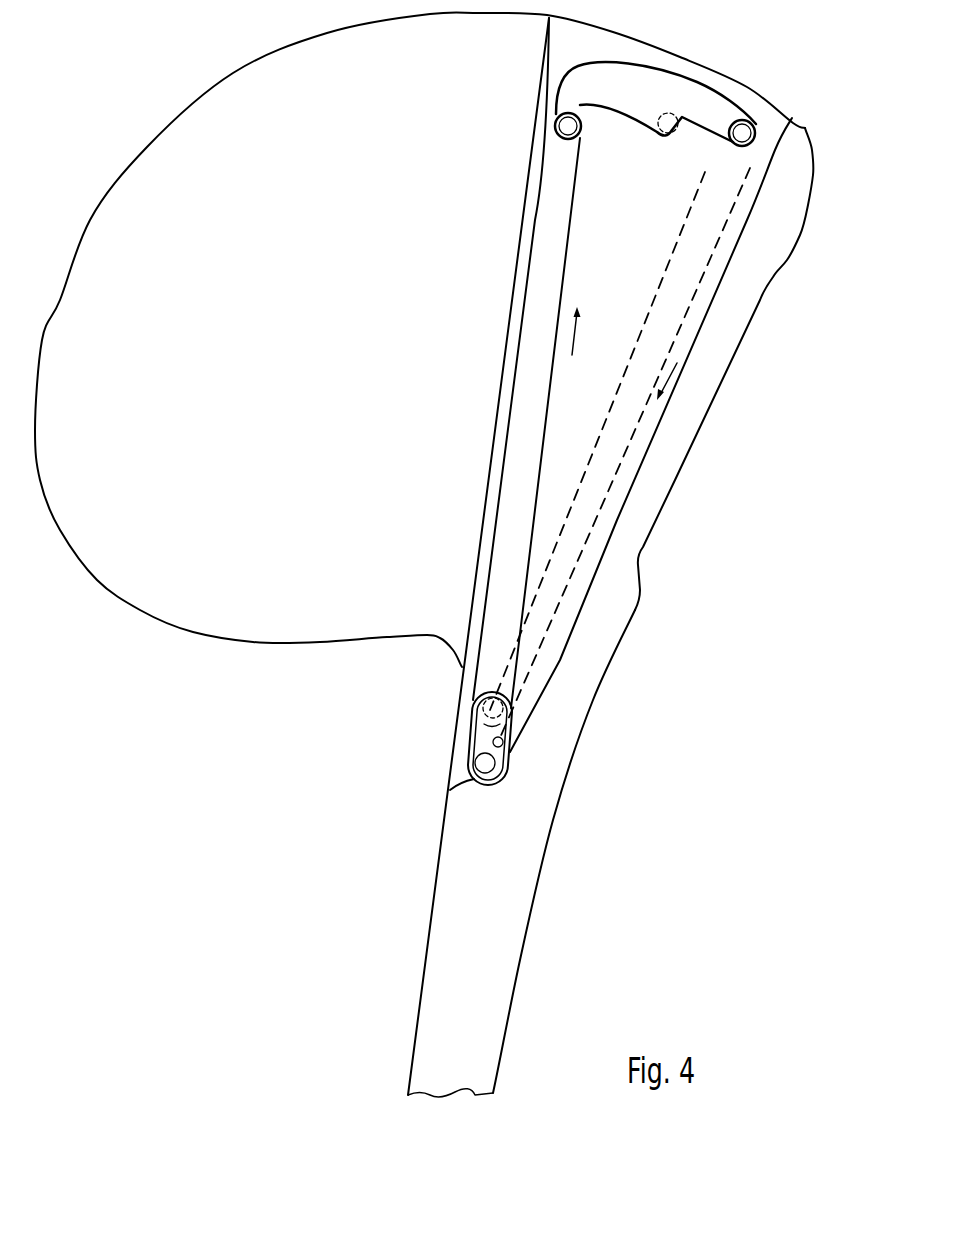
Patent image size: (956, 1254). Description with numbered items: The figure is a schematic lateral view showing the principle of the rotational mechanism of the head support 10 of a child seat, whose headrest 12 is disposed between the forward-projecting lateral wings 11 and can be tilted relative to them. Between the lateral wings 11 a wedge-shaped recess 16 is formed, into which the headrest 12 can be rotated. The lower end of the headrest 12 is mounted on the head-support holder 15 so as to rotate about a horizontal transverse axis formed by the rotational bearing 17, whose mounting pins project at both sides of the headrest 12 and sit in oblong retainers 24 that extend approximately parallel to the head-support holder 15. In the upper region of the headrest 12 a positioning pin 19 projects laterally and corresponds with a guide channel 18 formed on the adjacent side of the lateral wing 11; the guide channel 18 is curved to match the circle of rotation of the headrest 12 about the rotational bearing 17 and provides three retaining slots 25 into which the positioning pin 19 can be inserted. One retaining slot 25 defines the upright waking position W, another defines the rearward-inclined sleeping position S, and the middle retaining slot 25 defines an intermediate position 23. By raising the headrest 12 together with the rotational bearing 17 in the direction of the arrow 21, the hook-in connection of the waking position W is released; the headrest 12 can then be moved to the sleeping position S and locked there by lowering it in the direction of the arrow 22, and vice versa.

The head support 10 is at (729, 595).
The lateral wing 11 is at (115, 572).
The headrest 12 is at (523, 402).
The head-support holder 15 is at (447, 962).
The wedge-shaped recess 16 is at (738, 195).
The rotational bearing 17 is at (487, 709).
The guide channel 18 is at (687, 92).
The positioning pin 19 is at (567, 126).
The arrow 21 is at (574, 344).
The arrow 22 is at (678, 373).
The intermediate position 23 is at (665, 106).
The oblong retainer 24 is at (503, 744).
The retaining slot 25 is at (581, 136).
The sleeping position S is at (655, 290).
The waking position W is at (521, 313).